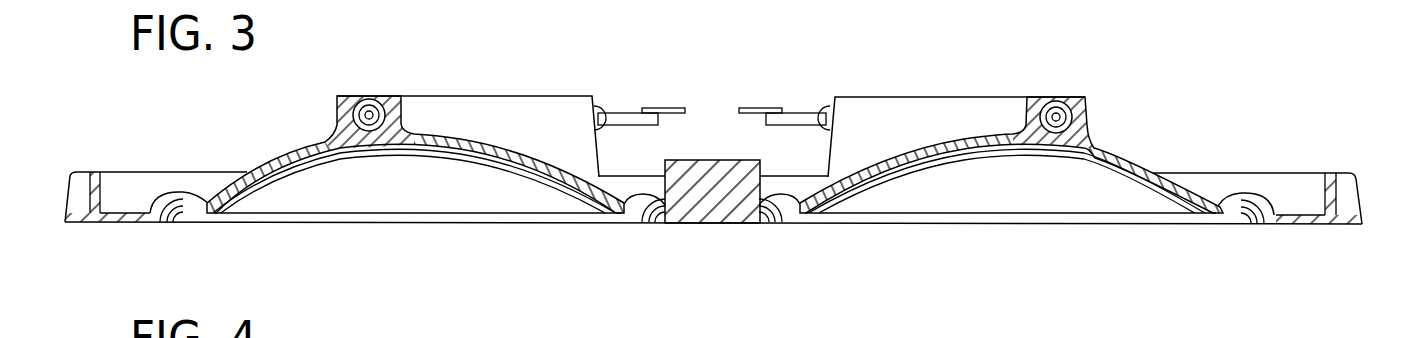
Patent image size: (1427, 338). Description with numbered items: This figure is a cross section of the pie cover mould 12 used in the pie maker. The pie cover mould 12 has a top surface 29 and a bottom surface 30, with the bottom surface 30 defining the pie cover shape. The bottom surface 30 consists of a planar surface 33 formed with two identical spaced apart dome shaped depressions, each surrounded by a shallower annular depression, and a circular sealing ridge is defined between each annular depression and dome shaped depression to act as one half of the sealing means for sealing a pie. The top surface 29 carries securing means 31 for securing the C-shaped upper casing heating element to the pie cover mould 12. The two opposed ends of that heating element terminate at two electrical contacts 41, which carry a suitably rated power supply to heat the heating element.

The pie cover mould 12 is at (1364, 189).
The top surface 29 is at (1288, 214).
The bottom surface 30 is at (1300, 226).
The securing means 31 is at (1087, 119).
The planar surface 33 is at (725, 231).
The electrical contacts 41 is at (750, 108).